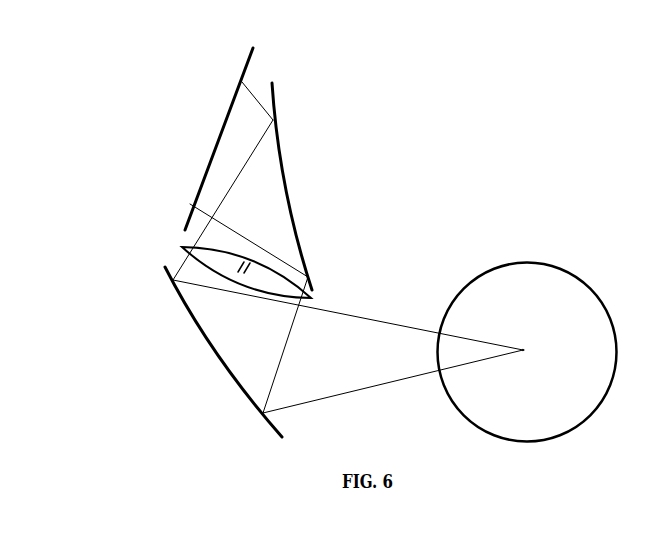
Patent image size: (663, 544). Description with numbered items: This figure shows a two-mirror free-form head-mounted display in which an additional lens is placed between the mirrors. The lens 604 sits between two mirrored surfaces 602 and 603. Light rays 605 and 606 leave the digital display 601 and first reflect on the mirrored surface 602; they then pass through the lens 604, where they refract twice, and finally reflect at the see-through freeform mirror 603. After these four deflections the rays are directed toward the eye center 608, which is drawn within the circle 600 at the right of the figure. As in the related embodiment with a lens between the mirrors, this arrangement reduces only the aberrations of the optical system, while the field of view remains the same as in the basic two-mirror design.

The image sensor 600 is at (558, 267).
The digital display 601 is at (219, 128).
The mirrored surface 602 is at (283, 167).
The see-through freeform mirror 603 is at (190, 318).
The lens 604 is at (277, 272).
The ray 605 is at (273, 120).
The ray 606 is at (205, 213).
The eye center 608 is at (533, 335).